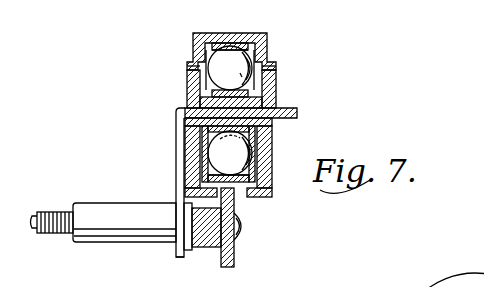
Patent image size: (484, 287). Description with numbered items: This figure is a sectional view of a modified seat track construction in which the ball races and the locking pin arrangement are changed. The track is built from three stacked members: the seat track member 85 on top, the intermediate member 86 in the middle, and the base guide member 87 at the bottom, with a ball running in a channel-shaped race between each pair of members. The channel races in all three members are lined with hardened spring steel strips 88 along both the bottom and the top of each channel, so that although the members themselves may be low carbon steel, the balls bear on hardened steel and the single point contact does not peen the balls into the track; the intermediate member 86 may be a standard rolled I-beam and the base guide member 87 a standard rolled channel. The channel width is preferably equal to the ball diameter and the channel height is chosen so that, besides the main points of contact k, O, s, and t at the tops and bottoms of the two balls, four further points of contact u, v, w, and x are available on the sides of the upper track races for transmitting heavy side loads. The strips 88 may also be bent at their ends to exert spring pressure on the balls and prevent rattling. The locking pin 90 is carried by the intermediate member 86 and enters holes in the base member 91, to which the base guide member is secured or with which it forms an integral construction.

The seat track member 85 is at (268, 44).
The intermediate member 86 is at (190, 106).
The base guide member 87 is at (270, 194).
The hardened spring steel strips 88 is at (238, 40).
The locking pin 90 is at (244, 221).
The base member 91 is at (234, 255).
The main point of contact k is at (230, 42).
The additional point of contact u is at (200, 63).
The additional point of contact v is at (270, 61).
The additional point of contact w is at (200, 78).
The additional point of contact x is at (262, 80).
The main point of contact O is at (229, 92).
The main point of contact s is at (230, 153).
The main point of contact t is at (228, 176).